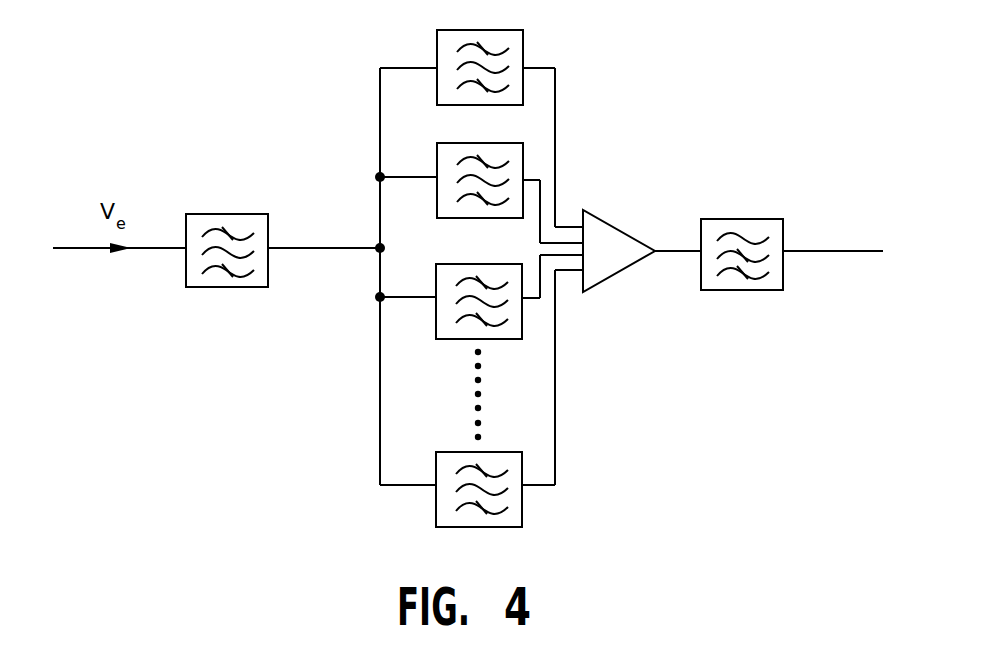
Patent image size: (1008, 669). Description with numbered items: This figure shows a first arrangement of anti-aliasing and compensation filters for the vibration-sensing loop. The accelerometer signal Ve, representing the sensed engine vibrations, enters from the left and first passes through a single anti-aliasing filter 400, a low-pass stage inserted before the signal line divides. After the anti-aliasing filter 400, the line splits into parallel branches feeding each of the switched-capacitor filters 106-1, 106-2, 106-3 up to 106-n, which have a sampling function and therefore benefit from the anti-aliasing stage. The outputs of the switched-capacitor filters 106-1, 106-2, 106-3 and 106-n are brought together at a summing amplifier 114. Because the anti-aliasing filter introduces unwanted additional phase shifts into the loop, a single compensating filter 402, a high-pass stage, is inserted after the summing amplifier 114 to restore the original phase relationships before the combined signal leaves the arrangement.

The anti-aliasing filter 400 is at (262, 277).
The switched-capacitor filter 106-1 is at (515, 61).
The switched-capacitor filter 106-2 is at (515, 160).
The switched-capacitor filter 106-3 is at (517, 312).
The switched-capacitor filter 106-n is at (519, 503).
The summing amplifier 114 is at (632, 237).
The compensating filter 402 is at (777, 272).